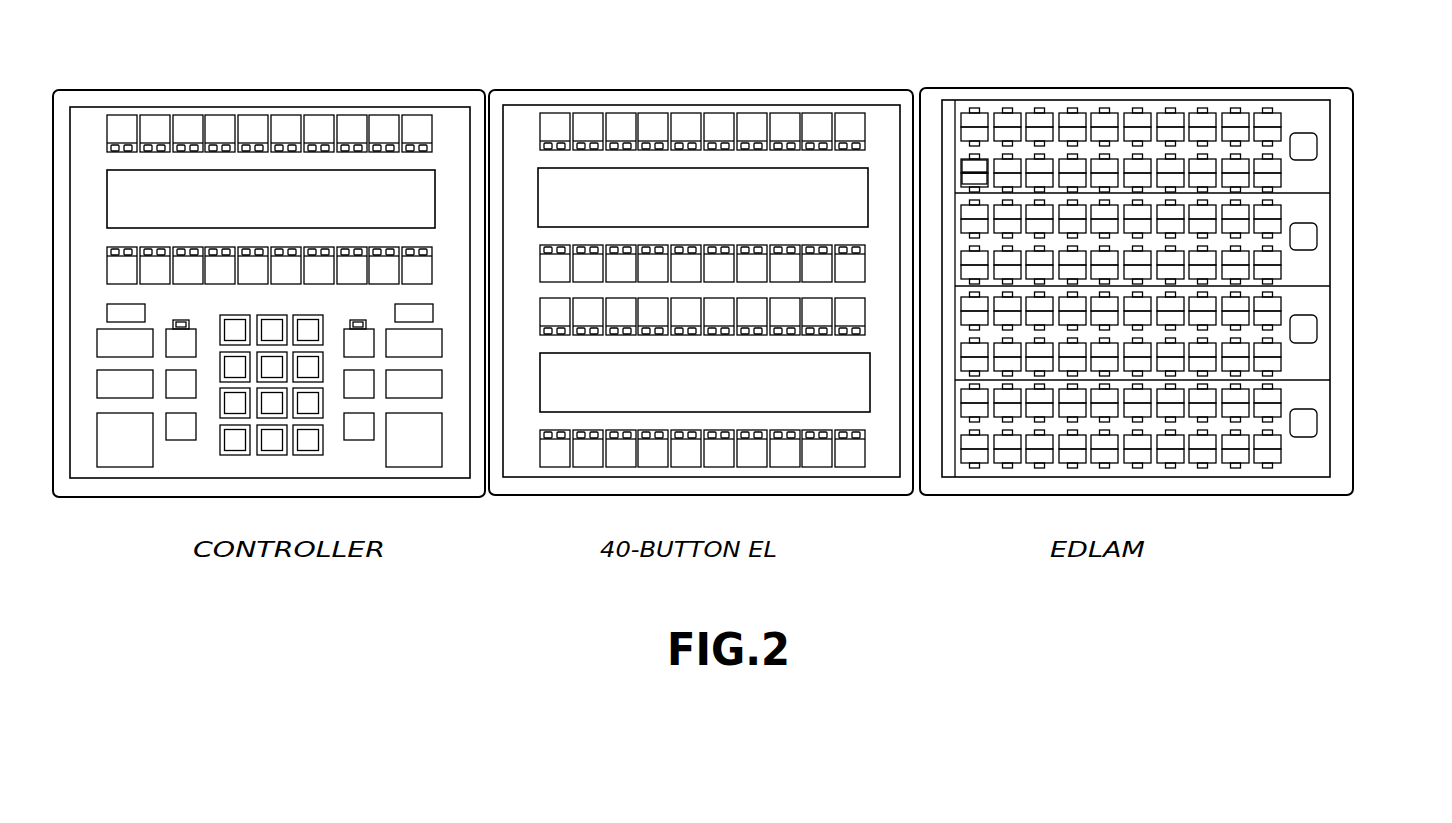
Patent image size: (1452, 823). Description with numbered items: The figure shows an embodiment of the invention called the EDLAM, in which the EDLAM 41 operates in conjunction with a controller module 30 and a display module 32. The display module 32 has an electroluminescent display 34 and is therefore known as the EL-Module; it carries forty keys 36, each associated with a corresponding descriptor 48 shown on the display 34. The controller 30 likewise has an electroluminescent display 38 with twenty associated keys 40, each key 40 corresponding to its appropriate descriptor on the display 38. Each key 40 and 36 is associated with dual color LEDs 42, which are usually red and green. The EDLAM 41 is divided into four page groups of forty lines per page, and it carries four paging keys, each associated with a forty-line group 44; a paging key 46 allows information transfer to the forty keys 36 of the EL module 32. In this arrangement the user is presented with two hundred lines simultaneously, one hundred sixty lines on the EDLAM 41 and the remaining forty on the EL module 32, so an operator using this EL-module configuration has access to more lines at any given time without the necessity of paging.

The controller module 30 is at (113, 487).
The display module 32 is at (570, 487).
The electroluminescent display 34 is at (553, 187).
The keys 36 is at (745, 128).
The electroluminescent display 38 is at (198, 203).
The keys 40 is at (158, 127).
The EDLAM 41 is at (1143, 483).
The dual color LEDs 42 is at (313, 148).
The key row group 44 is at (1313, 180).
The paging key 46 is at (1303, 148).
The descriptor 48 is at (540, 392).